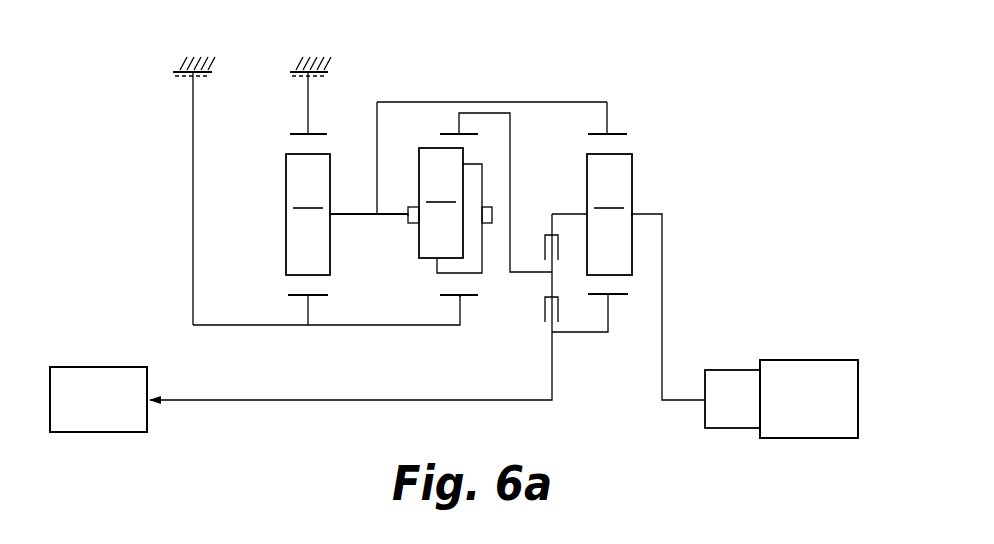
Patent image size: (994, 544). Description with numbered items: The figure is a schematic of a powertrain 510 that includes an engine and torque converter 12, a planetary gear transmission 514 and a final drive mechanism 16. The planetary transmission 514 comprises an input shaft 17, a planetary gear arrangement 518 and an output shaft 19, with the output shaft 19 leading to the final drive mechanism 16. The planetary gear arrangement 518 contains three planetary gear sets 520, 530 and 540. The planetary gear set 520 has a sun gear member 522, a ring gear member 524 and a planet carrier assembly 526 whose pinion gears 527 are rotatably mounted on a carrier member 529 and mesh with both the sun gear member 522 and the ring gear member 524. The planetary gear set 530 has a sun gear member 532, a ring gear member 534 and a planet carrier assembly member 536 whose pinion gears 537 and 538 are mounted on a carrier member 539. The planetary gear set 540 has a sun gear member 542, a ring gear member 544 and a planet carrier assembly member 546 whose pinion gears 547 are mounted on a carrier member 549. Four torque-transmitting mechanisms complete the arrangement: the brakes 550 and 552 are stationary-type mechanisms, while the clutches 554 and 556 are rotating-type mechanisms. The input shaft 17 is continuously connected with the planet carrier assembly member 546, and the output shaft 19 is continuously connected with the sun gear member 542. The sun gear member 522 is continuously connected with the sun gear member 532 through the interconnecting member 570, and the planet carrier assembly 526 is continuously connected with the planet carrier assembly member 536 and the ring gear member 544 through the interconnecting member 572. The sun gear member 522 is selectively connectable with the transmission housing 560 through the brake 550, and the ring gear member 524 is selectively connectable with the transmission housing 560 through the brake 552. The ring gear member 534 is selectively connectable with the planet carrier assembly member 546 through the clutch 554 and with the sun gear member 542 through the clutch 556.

The powertrain 510 is at (143, 180).
The torque-transmitting mechanism 550 is at (173, 71).
The torque-transmitting mechanism 552 is at (290, 71).
The transmission housing 560 is at (180, 58).
The ring gear member 524 is at (302, 133).
The pinion gears 527 is at (308, 214).
The carrier member 529 is at (353, 213).
The carrier member 539 is at (397, 213).
The planet carrier assembly 526 is at (340, 222).
The planet carrier assembly member 536 is at (402, 222).
The interconnecting member 572 is at (375, 132).
The planetary gear transmission 514 is at (462, 72).
The planetary gear arrangement 518 is at (548, 72).
The ring gear member 544 is at (622, 132).
The ring gear member 534 is at (450, 132).
The pinion gears 537 is at (441, 203).
The pinion gears 538 is at (483, 178).
The pinion gears 547 is at (609, 214).
The planet carrier assembly member 546 is at (643, 208).
The carrier member 549 is at (654, 213).
The torque-transmitting mechanism 554 is at (540, 236).
The torque-transmitting mechanism 556 is at (540, 314).
The planetary gear set 520 is at (298, 297).
The sun gear member 522 is at (320, 297).
The interconnecting member 570 is at (372, 327).
The planetary gear set 530 is at (450, 297).
The sun gear member 532 is at (470, 297).
The planetary gear set 540 is at (602, 297).
The sun gear member 542 is at (622, 297).
The final drive mechanism 16 is at (117, 354).
The output shaft 19 is at (230, 400).
The engine and torque converter 12 is at (792, 356).
The input shaft 17 is at (677, 400).